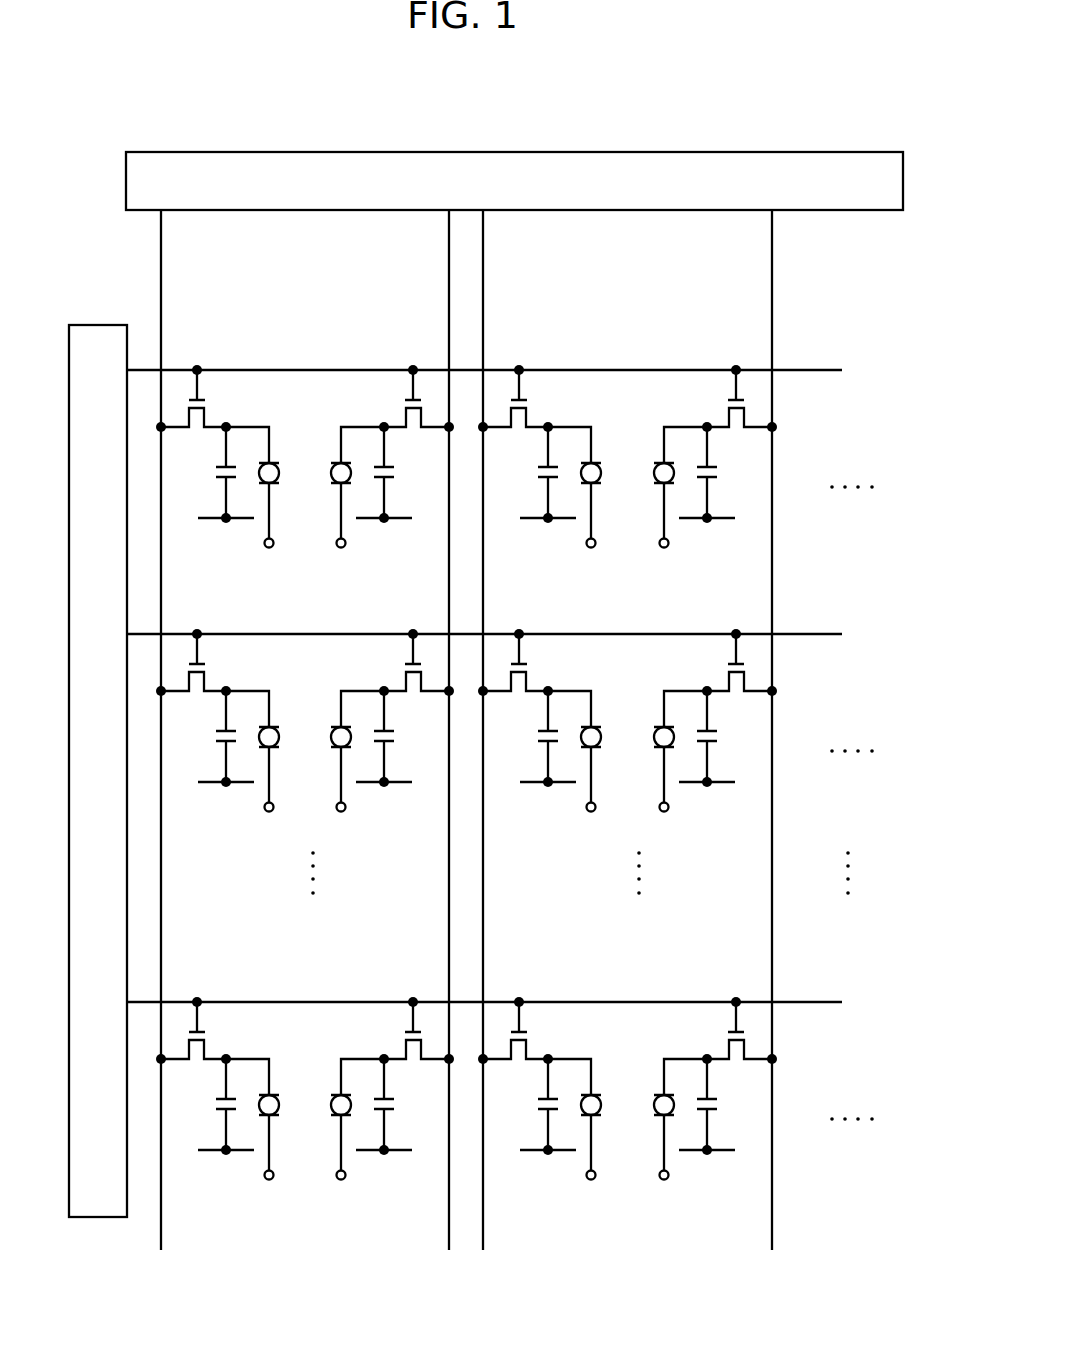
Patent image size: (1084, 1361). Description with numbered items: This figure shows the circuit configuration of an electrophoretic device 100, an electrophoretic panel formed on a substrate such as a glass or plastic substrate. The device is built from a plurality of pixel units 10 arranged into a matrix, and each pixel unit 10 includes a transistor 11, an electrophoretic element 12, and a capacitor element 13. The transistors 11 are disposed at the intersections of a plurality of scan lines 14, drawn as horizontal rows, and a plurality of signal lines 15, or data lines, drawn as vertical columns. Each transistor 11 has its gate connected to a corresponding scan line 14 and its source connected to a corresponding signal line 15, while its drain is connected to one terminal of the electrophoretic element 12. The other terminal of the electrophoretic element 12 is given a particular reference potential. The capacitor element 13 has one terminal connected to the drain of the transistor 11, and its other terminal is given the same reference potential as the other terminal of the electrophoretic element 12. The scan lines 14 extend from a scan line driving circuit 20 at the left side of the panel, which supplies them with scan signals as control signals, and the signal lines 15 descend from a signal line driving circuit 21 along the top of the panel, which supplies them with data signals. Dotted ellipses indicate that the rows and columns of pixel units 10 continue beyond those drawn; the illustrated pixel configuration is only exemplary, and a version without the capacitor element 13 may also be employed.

The electrophoretic device 100 is at (619, 90).
The signal line driving circuit 21 is at (845, 151).
The scan line driving circuit 20 is at (104, 324).
The pixel unit 10 is at (466, 739).
The transistor 11 is at (207, 402).
The electrophoretic element 12 is at (279, 474).
The capacitor element 13 is at (213, 471).
The scan line 14 is at (864, 985).
The signal line 15 is at (766, 1276).